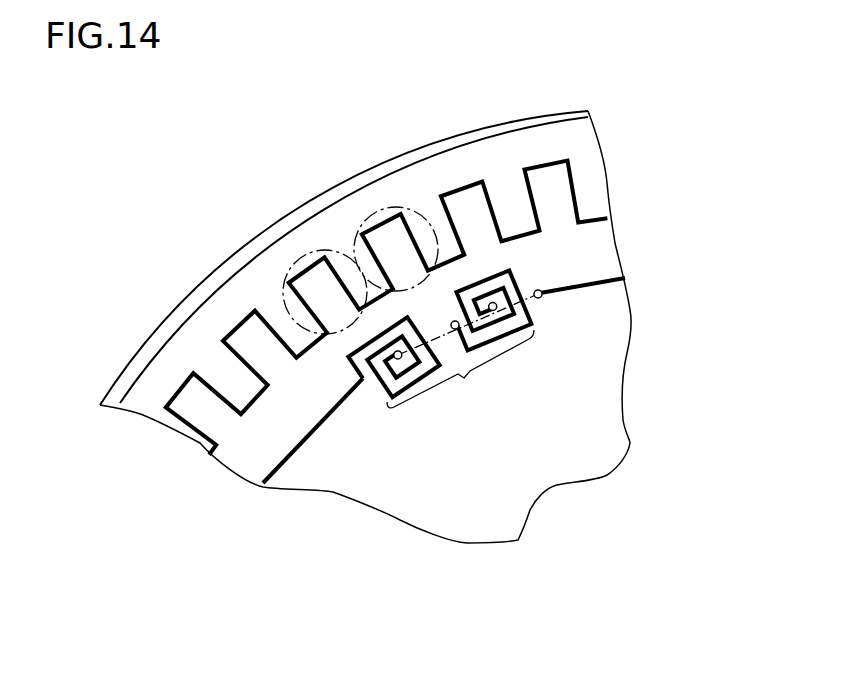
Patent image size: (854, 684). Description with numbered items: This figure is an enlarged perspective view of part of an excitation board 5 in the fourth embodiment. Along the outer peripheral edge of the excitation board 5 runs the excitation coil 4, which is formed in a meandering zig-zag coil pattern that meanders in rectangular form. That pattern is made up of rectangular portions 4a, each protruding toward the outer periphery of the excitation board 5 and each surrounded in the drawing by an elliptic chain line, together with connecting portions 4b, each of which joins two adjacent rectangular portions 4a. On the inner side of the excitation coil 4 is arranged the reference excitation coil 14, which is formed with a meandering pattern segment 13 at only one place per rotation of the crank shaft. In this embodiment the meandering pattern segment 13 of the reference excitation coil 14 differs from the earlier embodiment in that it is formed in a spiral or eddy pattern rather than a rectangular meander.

The excitation coil 4 is at (577, 190).
The rectangular portion 4a is at (378, 215).
The connecting portion 4b is at (377, 303).
The excitation board 5 is at (220, 268).
The meandering pattern segment 13 is at (441, 341).
The reference excitation coil 14 is at (595, 278).